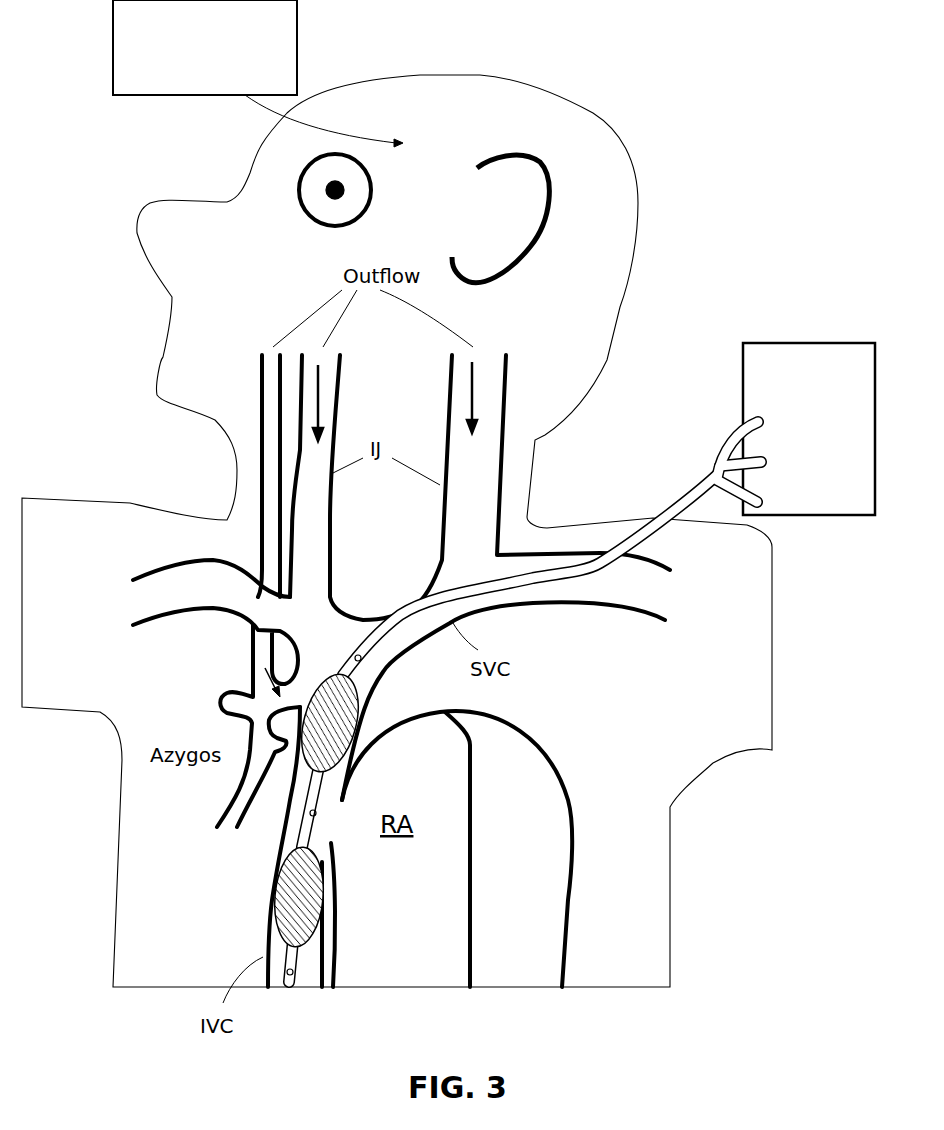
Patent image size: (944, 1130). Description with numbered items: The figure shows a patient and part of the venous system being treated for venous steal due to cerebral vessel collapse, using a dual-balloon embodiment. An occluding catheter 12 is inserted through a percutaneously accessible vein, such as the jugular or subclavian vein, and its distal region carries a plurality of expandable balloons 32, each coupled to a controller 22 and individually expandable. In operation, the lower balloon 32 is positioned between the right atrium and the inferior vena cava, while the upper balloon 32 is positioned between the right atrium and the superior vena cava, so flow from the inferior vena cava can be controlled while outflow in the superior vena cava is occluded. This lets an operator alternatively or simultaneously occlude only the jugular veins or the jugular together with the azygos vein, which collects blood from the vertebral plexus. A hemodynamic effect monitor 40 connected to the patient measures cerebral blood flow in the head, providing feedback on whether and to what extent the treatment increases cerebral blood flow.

The occluding catheter 12 is at (663, 510).
The controller 22 is at (809, 429).
The expandable balloon 32 is at (318, 760).
The hemodynamic effect monitor 40 is at (258, 73).